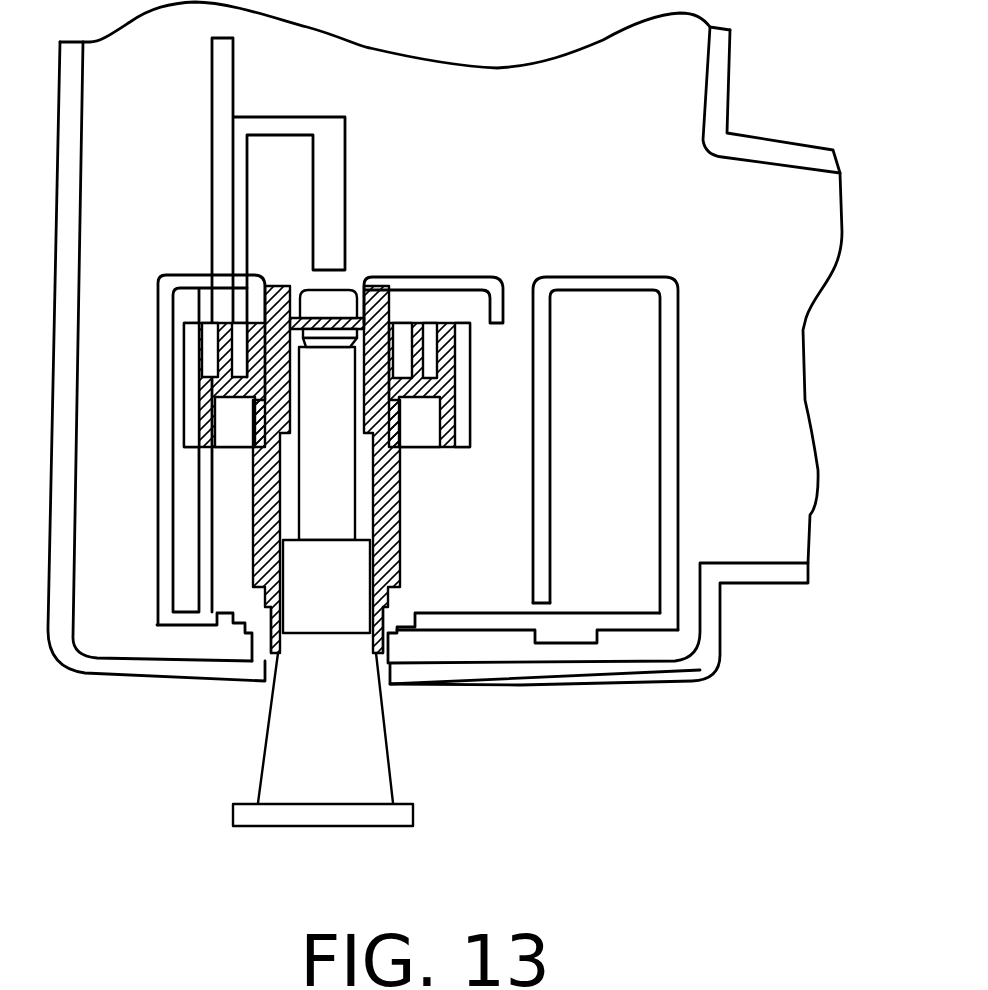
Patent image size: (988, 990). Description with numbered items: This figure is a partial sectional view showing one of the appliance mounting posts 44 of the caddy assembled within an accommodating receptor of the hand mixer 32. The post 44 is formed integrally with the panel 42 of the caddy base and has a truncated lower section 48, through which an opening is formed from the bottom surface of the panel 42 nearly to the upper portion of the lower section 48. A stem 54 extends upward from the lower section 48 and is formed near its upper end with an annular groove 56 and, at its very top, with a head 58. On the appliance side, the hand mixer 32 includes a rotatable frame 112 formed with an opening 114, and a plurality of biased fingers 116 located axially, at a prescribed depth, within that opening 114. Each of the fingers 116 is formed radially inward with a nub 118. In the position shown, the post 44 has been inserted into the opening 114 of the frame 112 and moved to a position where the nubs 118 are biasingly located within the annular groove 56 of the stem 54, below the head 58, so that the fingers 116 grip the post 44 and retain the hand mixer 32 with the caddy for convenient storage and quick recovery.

The hand mixer 32 is at (740, 82).
The panel 42 is at (265, 818).
The appliance mounting post 44 is at (359, 776).
The truncated lower section 48 is at (283, 730).
The stem 54 is at (318, 472).
The annular groove 56 is at (300, 334).
The head 58 is at (345, 288).
The rotatable frame 112 is at (393, 495).
The opening 114 is at (283, 603).
The biased finger 116 is at (362, 358).
The nub 118 is at (335, 337).